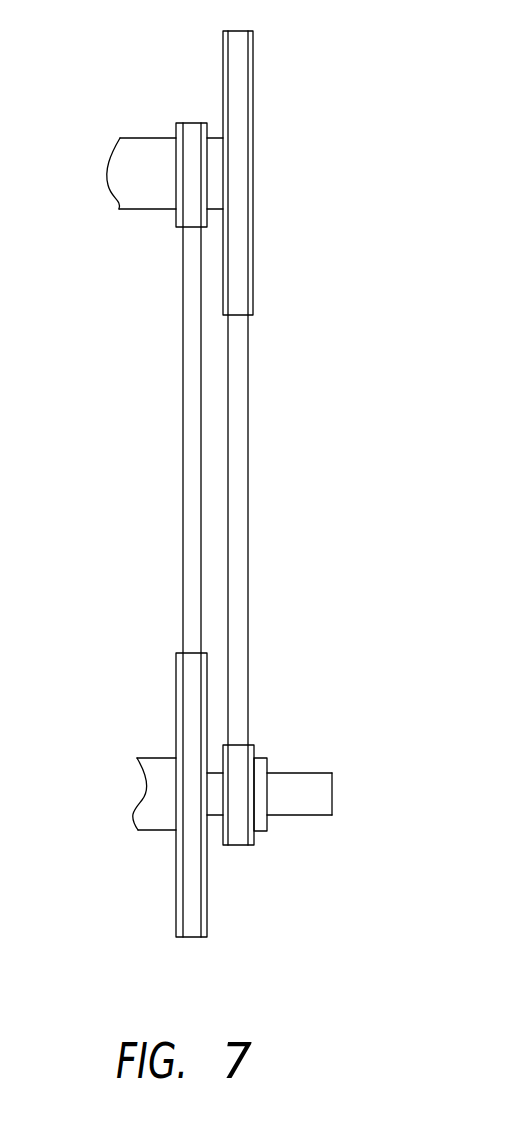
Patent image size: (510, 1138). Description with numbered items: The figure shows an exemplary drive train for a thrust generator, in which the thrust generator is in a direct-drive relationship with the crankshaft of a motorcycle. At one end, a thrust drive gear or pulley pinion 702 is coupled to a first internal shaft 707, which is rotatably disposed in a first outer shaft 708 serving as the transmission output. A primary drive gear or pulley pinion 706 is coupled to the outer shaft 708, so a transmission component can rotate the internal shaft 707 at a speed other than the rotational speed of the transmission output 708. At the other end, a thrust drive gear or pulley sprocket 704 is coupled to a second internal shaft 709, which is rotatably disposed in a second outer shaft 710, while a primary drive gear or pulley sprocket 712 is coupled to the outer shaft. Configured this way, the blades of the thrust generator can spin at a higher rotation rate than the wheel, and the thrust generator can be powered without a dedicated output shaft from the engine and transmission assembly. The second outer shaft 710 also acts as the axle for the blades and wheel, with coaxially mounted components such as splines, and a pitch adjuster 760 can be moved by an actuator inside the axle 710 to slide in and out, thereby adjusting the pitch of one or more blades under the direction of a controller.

The thrust drive gear or pulley pinion 702 is at (248, 87).
The thrust drive gear or pulley sprocket 704 is at (238, 846).
The primary drive gear or pulley pinion 706 is at (177, 212).
The first internal shaft 707 is at (215, 137).
The first outer shaft 708 is at (128, 150).
The second internal shaft 709 is at (210, 817).
The second outer shaft 710 is at (143, 805).
The primary drive gear or pulley sprocket 712 is at (176, 905).
The pitch adjuster 760 is at (311, 773).